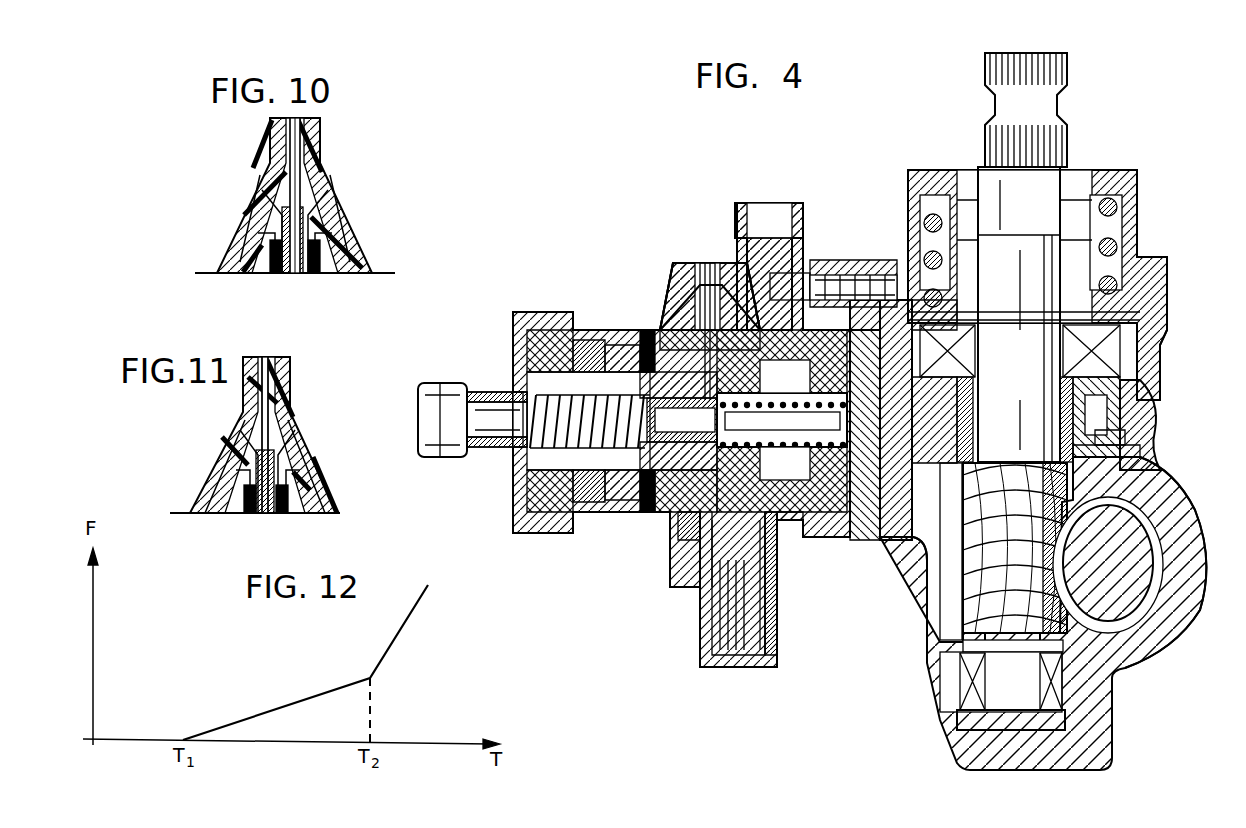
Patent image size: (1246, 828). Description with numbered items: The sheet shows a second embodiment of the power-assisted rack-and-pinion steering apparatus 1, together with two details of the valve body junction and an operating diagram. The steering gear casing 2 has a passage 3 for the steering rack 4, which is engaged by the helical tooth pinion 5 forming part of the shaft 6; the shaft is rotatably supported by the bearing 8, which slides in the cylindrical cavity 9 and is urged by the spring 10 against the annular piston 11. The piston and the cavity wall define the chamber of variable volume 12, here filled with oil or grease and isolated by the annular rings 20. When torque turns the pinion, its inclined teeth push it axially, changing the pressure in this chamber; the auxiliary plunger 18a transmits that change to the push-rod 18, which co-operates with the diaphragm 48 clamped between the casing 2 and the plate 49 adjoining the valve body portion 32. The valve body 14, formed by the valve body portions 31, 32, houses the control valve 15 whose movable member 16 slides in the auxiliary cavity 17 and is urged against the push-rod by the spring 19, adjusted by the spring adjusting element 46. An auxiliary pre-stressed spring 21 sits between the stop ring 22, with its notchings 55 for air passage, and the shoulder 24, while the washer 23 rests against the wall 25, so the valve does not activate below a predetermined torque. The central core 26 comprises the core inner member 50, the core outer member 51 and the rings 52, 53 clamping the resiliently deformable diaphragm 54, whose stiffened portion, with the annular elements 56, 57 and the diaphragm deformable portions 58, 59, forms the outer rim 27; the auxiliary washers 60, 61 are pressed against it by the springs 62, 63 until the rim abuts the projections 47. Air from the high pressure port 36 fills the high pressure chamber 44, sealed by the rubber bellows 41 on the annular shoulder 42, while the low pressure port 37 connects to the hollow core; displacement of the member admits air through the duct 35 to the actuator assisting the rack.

In FIG. 4, the power-assisted rack-and-pinion steering apparatus 1 is at (1140, 212).
In FIG. 4, the steering gear casing 2 is at (1150, 265).
In FIG. 4, the passage 3 is at (1180, 570).
In FIG. 4, the steering rack 4 is at (1130, 580).
In FIG. 4, the helical tooth pinion 5 is at (1080, 640).
In FIG. 4, the shaft 6 is at (1160, 462).
In FIG. 4, the bearing 8 is at (1115, 362).
In FIG. 4, the cylindrical cavity 9 is at (1130, 420).
In FIG. 4, the spring 10 is at (1108, 200).
In FIG. 4, the annular piston 11 is at (1025, 372).
In FIG. 4, the chamber of variable volume 12 is at (1125, 447).
In FIG. 4, the valve body 14 is at (670, 256).
In FIG. 10, the valve body 14 is at (260, 162).
In FIG. 11, the valve body 14 is at (238, 404).
In FIG. 4, the control valve 15 is at (690, 452).
In FIG. 4, the movable member 16 is at (560, 500).
In FIG. 4, the auxiliary cavity 17 is at (706, 632).
In FIG. 4, the push-rod 18 is at (882, 475).
In FIG. 4, the auxiliary plunger 18a is at (955, 625).
In FIG. 4, the spring 19 is at (500, 435).
In FIG. 4, the annular rings 20 is at (945, 380).
In FIG. 4, the auxiliary pre-stressed spring 21 is at (862, 520).
In FIG. 4, the stop ring 22 is at (790, 482).
In FIG. 4, the washer 23 is at (890, 522).
In FIG. 4, the shoulder 24 is at (822, 440).
In FIG. 4, the wall 25 is at (950, 350).
In FIG. 4, the central core 26 is at (810, 455).
In FIG. 4, the outer rim 27 is at (752, 220).
In FIG. 4, the valve body portion 31 is at (540, 325).
In FIG. 10, the valve body portion 31 is at (320, 140).
In FIG. 11, the valve body portion 31 is at (240, 420).
In FIG. 10, the valve body portion 32 is at (315, 185).
In FIG. 11, the valve body portion 32 is at (285, 435).
In FIG. 4, the duct 35 is at (772, 600).
In FIG. 4, the high pressure port 36 is at (775, 205).
In FIG. 4, the low pressure port 37 is at (425, 410).
In FIG. 4, the rubber bellows 41 is at (590, 338).
In FIG. 4, the annular shoulder 42 is at (620, 345).
In FIG. 4, the high pressure chamber 44 is at (800, 300).
In FIG. 4, the spring adjusting element 46 is at (490, 395).
In FIG. 4, the projections 47 is at (610, 380).
In FIG. 4, the diaphragm 48 is at (860, 265).
In FIG. 4, the plate 49 is at (870, 475).
In FIG. 4, the core inner member 50 is at (650, 500).
In FIG. 4, the core outer member 51 is at (662, 480).
In FIG. 4, the ring 52 is at (690, 535).
In FIG. 4, the ring 53 is at (778, 548).
In FIG. 4, the resiliently deformable diaphragm 54 is at (682, 290).
In FIG. 10, the resiliently deformable diaphragm 54 is at (270, 198).
In FIG. 11, the resiliently deformable diaphragm 54 is at (262, 385).
In FIG. 4, the notchings 55 is at (760, 434).
In FIG. 4, the annular element 56 is at (660, 330).
In FIG. 10, the annular element 56 is at (275, 222).
In FIG. 11, the annular element 56 is at (255, 468).
In FIG. 4, the annular element 57 is at (705, 300).
In FIG. 10, the annular element 57 is at (305, 215).
In FIG. 11, the annular element 57 is at (278, 462).
In FIG. 4, the diaphragm deformable portion 58 is at (702, 300).
In FIG. 4, the diaphragm deformable portion 59 is at (660, 300).
In FIG. 4, the auxiliary washer 60 is at (690, 458).
In FIG. 10, the auxiliary washer 60 is at (275, 253).
In FIG. 11, the auxiliary washer 60 is at (250, 495).
In FIG. 10, the auxiliary washer 61 is at (315, 253).
In FIG. 11, the auxiliary washer 61 is at (288, 495).
In FIG. 4, the spring 62 is at (670, 470).
In FIG. 4, the spring 63 is at (755, 642).